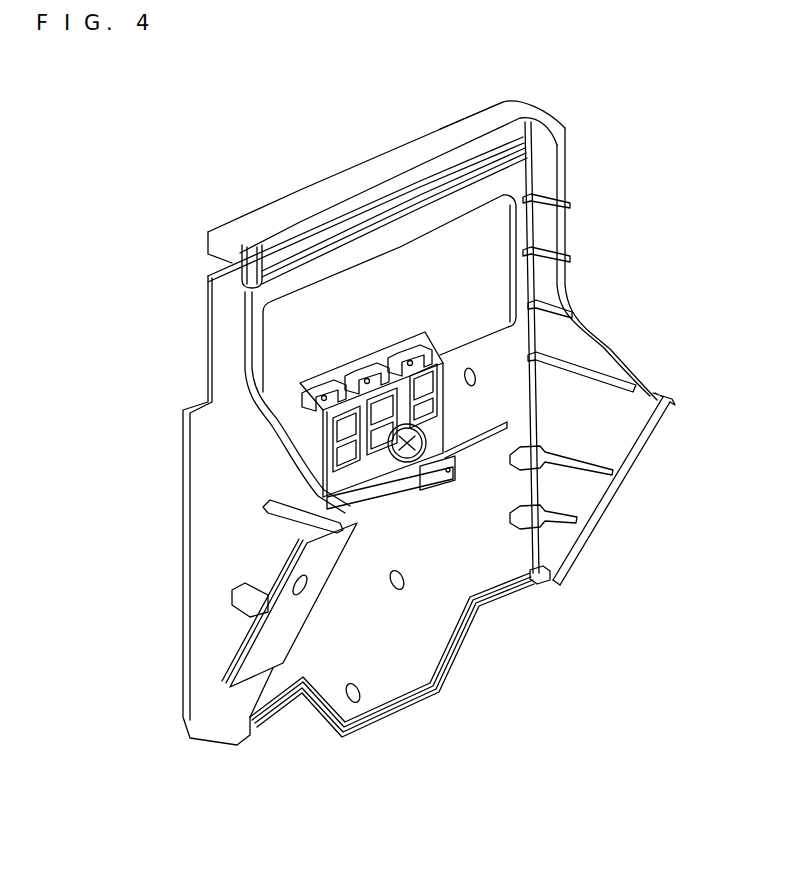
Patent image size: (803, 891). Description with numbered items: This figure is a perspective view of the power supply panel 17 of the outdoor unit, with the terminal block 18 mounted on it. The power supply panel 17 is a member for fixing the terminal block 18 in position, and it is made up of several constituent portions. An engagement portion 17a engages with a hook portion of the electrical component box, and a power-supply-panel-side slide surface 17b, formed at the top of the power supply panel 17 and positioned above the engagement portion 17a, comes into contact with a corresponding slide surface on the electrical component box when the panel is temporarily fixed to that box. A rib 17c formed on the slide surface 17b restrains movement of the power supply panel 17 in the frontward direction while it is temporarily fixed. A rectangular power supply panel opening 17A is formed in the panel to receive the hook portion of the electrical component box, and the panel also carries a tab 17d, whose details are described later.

The power supply panel 17 is at (604, 184).
The engagement portion 17a is at (307, 287).
The power-supply-panel-side slide surface 17b is at (295, 210).
The rib 17c is at (432, 139).
The power supply panel opening 17A is at (430, 262).
The tab 17d is at (643, 440).
The terminal block 18 is at (370, 463).